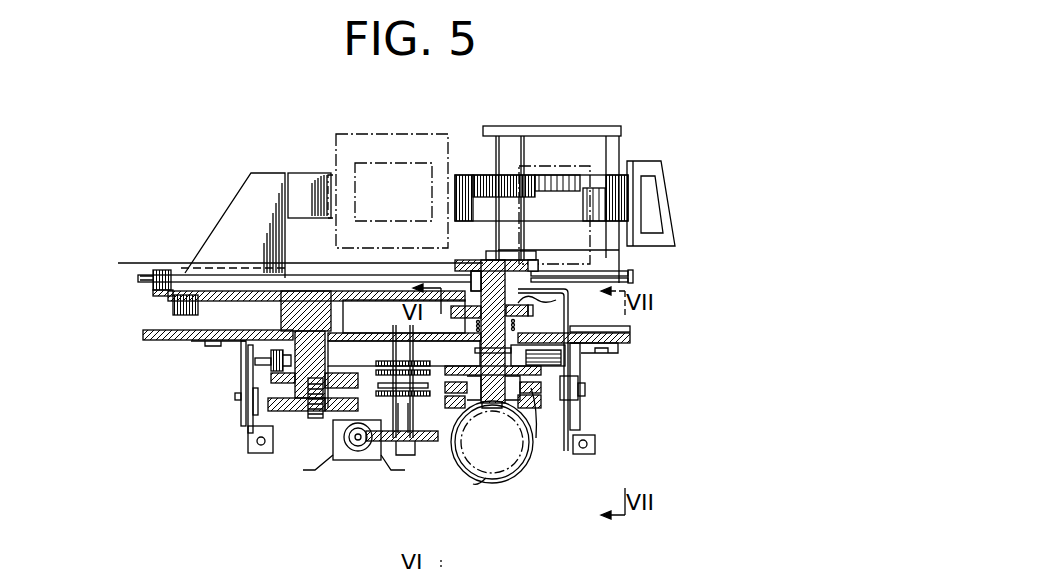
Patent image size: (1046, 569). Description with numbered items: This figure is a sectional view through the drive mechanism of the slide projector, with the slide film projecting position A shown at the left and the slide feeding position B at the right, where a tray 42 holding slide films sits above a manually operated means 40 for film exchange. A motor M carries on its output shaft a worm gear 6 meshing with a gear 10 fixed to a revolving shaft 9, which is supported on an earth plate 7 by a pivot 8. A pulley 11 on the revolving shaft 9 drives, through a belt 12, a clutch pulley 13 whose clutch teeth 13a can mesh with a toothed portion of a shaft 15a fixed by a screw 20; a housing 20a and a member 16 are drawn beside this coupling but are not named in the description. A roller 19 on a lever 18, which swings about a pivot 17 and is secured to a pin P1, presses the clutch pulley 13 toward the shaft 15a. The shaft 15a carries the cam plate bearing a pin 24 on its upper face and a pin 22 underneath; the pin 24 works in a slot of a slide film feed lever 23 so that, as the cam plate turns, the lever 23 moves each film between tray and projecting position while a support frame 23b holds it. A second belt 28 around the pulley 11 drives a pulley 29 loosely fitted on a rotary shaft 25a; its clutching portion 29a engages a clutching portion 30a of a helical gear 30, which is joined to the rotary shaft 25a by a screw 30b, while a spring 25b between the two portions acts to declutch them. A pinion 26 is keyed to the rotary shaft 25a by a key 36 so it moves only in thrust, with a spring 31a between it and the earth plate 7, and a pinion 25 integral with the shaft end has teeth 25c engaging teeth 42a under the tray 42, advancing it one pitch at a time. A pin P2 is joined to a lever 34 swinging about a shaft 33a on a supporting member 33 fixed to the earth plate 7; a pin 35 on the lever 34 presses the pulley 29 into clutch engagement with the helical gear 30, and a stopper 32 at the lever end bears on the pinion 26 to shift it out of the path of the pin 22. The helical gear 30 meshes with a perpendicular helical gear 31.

The slide film projecting position A is at (420, 133).
The slide feeding position B is at (532, 137).
The tray 42 is at (588, 132).
The teeth of the tray 42a is at (522, 253).
The manually operated means 40 is at (643, 160).
The support frame 23b is at (250, 183).
The slide film feed lever 23 is at (317, 273).
The pin 24 is at (155, 262).
The pin 22 is at (162, 300).
The shaft 15a is at (283, 302).
The earth plate 7 is at (133, 328).
The bracket 16 is at (237, 350).
The roller 19 is at (263, 358).
The lever 18 is at (247, 375).
The pivot 17 is at (230, 392).
The clutch pulley 13 is at (242, 417).
The pin P1 is at (252, 447).
The clutch teeth 13a is at (268, 405).
The screw 20 is at (310, 410).
The housing 20a is at (353, 378).
The second belt 28 is at (380, 357).
The belt 12 is at (395, 408).
The pulley 11 is at (415, 413).
The revolving shaft 9 is at (397, 433).
The pivot 8 is at (403, 440).
The motor M is at (333, 443).
The worm gear 6 is at (348, 432).
The gear 10 is at (357, 447).
The pinion 25 is at (467, 273).
The key 36 is at (498, 260).
The teeth of the pinion 25c is at (520, 252).
The pinion 26 is at (452, 267).
The spring 31a is at (463, 315).
The stopper 32 is at (532, 297).
The lever 34 is at (563, 319).
The pin 35 is at (533, 345).
The supporting member 33 is at (572, 378).
The shaft 33a is at (577, 387).
The pulley 29 is at (533, 367).
The clutching portion 29a is at (530, 385).
The rotary shaft 25a is at (482, 342).
The helical gear 30 is at (537, 400).
The screw 30b is at (503, 420).
The spring 25b is at (480, 395).
The clutching portion 30a is at (523, 380).
The helical gear 31 is at (478, 470).
The pin P2 is at (583, 440).